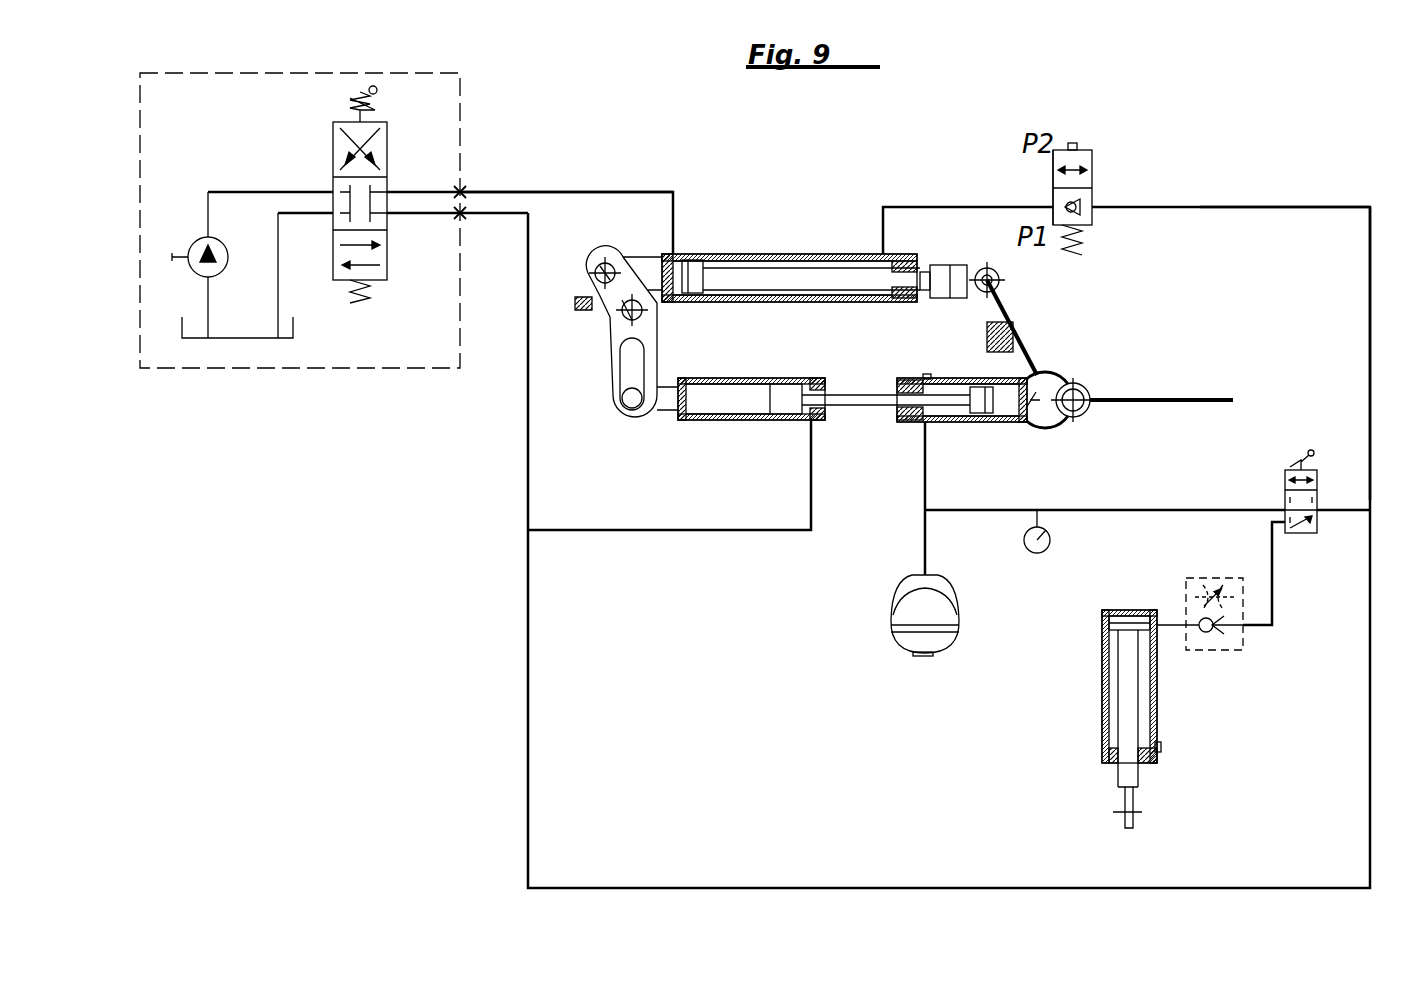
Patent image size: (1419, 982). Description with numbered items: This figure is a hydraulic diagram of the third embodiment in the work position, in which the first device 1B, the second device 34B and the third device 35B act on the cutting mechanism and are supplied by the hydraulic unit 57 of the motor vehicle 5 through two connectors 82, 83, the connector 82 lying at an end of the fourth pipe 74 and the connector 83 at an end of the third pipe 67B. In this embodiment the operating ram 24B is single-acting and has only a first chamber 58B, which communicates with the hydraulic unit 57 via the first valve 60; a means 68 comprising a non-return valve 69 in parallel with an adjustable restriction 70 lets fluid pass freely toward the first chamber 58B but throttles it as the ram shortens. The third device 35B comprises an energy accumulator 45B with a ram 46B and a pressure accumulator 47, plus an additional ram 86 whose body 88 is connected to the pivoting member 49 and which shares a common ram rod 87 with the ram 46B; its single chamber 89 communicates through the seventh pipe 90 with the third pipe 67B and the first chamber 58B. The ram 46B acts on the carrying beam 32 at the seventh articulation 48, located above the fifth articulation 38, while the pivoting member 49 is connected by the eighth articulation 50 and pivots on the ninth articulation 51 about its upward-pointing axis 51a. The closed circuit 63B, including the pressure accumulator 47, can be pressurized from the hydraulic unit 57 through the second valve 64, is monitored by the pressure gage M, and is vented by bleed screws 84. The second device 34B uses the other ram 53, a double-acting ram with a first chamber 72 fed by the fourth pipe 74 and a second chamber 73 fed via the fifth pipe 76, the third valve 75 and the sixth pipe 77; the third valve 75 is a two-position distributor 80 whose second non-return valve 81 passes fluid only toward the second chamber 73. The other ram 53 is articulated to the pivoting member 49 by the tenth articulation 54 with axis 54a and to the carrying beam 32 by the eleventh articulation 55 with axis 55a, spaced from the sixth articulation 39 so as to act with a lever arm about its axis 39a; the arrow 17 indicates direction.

The first device 1B is at (1169, 691).
The motor vehicle 5 is at (365, 372).
The direction of travel 17 is at (287, 630).
The operating ram 24B is at (1158, 700).
The carrying beam 32 is at (1150, 400).
The second device 34B is at (791, 272).
The third device 35B is at (885, 652).
The fifth articulation 38 is at (1045, 372).
The sixth articulation 39 is at (1090, 393).
The axis of the sixth articulation 39a is at (1042, 430).
The energy accumulator 45B is at (914, 416).
The ram 46B is at (975, 378).
The pressure accumulator 47 is at (930, 656).
The seventh articulation 48 is at (1082, 418).
The pivoting member 49 is at (602, 345).
The eighth articulation 50 is at (633, 415).
The ninth articulation 51 is at (630, 325).
The longitudinal axis of the ninth articulation 51a is at (625, 317).
The other ram 53 is at (845, 253).
The tenth articulation 54 is at (614, 265).
The longitudinal axis of the tenth articulation 54a is at (600, 270).
The eleventh articulation 55 is at (1000, 285).
The longitudinal axis of the eleventh articulation 55a is at (972, 272).
The hydraulic unit 57 is at (464, 118).
The first chamber 58B is at (1130, 622).
The first valve 60 is at (1320, 524).
The closed circuit 63B is at (1187, 506).
The second valve 64 is at (1318, 492).
The third pipe 67B is at (526, 757).
The means 68 is at (1215, 610).
The non-return valve 69 is at (1225, 630).
The adjustable restriction 70 is at (1213, 593).
The first chamber 72 is at (670, 300).
The second chamber 73 is at (815, 300).
The fourth pipe 74 is at (633, 190).
The third valve 75 is at (1092, 175).
The fifth pipe 76 is at (940, 205).
The sixth pipe 77 is at (1328, 205).
The distributor 80 is at (1097, 150).
The second non-return valve 81 is at (1095, 210).
The connector 82 is at (464, 190).
The connector 83 is at (462, 216).
The bleed screws 84 is at (926, 375).
The additional ram 86 is at (741, 410).
The common ram rod 87 is at (866, 406).
The body 88 is at (780, 422).
The single chamber 89 is at (808, 385).
The seventh pipe 90 is at (665, 532).
The pressure gage M is at (1040, 555).